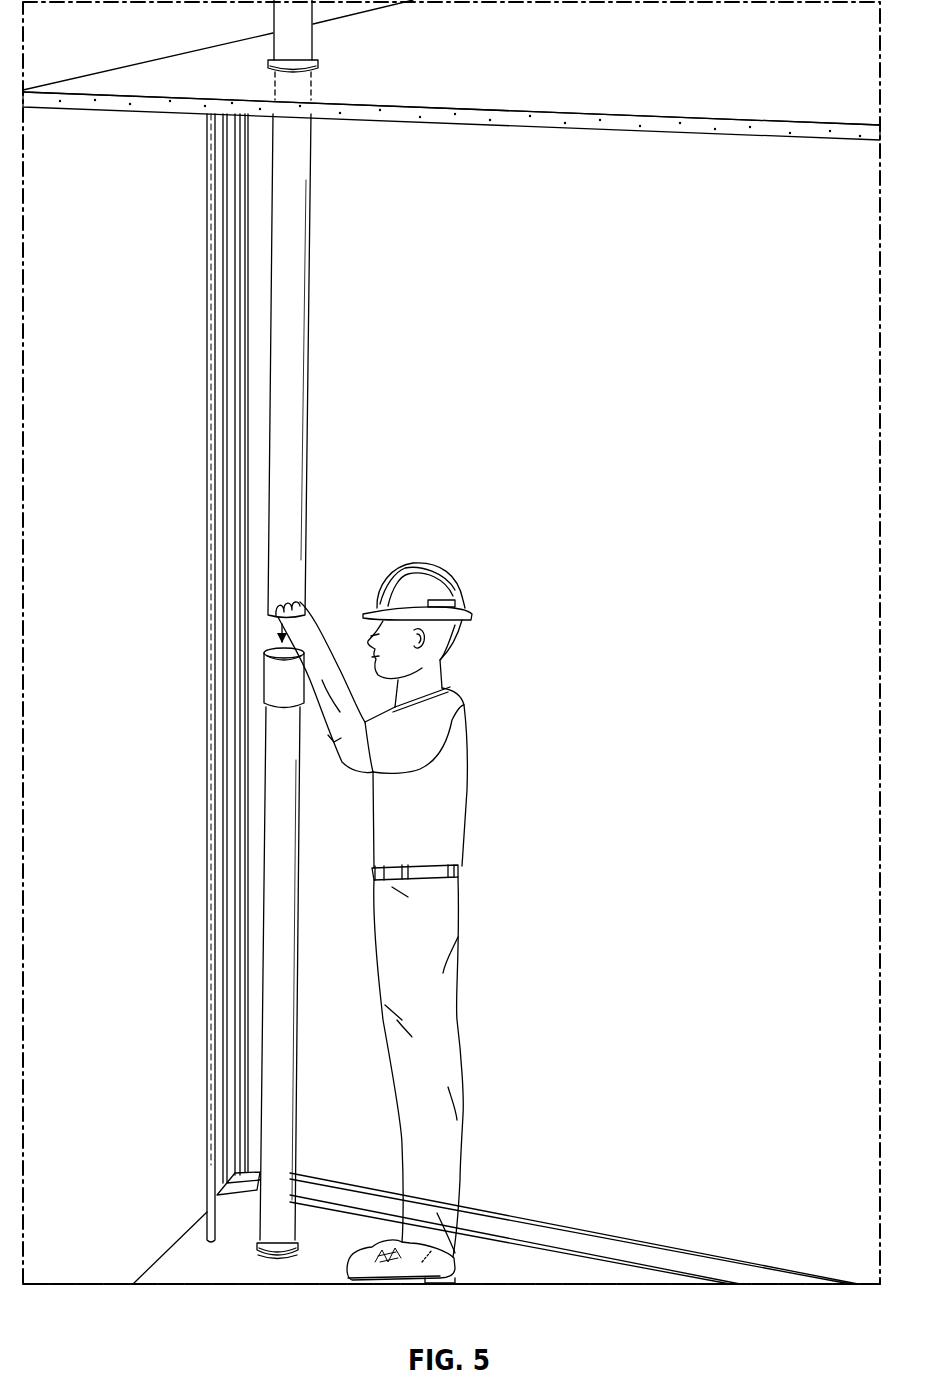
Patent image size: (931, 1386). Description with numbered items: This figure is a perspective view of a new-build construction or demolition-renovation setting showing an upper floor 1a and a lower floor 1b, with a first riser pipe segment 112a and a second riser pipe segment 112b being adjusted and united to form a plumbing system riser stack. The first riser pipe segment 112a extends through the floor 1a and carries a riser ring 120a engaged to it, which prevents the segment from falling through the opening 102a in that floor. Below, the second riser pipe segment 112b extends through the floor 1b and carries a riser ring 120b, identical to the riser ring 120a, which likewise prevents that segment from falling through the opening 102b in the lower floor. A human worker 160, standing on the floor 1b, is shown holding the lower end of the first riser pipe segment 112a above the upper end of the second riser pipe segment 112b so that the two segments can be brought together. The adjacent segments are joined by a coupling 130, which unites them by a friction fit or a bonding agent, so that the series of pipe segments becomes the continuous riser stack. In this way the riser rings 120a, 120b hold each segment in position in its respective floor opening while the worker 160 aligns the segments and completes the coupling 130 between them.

The floor 1a is at (825, 73).
The floor 1b is at (246, 1272).
The riser ring 120a is at (320, 68).
The opening 102a is at (322, 76).
The first riser pipe segment 112a is at (307, 492).
The coupling 130 is at (276, 678).
The second riser pipe segment 112b is at (265, 797).
The riser ring 120b is at (256, 1246).
The opening 102b is at (300, 1245).
The human worker 160 is at (465, 716).